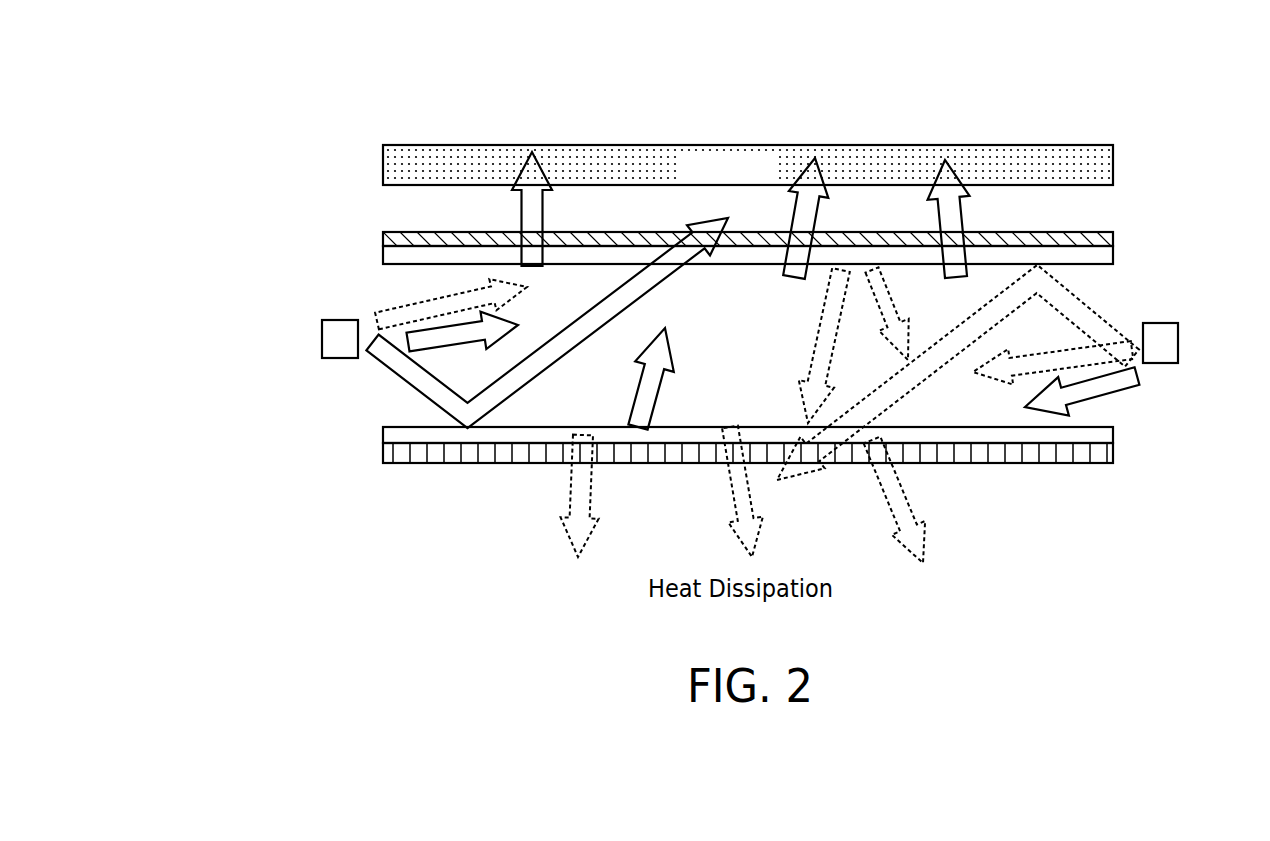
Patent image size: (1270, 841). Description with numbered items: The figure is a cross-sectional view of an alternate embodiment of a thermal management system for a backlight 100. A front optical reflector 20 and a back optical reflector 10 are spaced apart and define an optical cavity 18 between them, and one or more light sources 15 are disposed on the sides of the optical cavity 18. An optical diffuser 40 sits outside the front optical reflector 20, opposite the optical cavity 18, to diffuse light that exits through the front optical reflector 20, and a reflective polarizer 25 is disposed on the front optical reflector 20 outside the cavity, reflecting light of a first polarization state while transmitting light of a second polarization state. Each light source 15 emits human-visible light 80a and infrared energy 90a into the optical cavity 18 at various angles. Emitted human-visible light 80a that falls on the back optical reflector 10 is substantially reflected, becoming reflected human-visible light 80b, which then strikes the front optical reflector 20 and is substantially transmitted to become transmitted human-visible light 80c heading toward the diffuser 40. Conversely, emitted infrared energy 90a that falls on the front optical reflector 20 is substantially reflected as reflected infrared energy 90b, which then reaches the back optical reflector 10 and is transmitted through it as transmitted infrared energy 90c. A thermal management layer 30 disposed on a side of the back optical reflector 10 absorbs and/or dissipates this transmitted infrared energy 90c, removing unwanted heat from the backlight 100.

The backlight 100 is at (248, 86).
The optical diffuser 40 is at (1097, 173).
The reflective polarizer 25 is at (385, 232).
The front optical reflector 20 is at (385, 253).
The light source 15 is at (337, 338).
The back optical reflector 10 is at (385, 436).
The thermal management layer 30 is at (430, 455).
The optical cavity 18 is at (577, 390).
The emitted human-visible light 80a is at (425, 387).
The reflected human-visible light 80b is at (607, 312).
The transmitted human-visible light 80c is at (538, 207).
The emitted infrared energy 90a is at (1088, 357).
The reflected infrared energy 90b is at (878, 297).
The transmitted infrared energy 90c is at (598, 505).